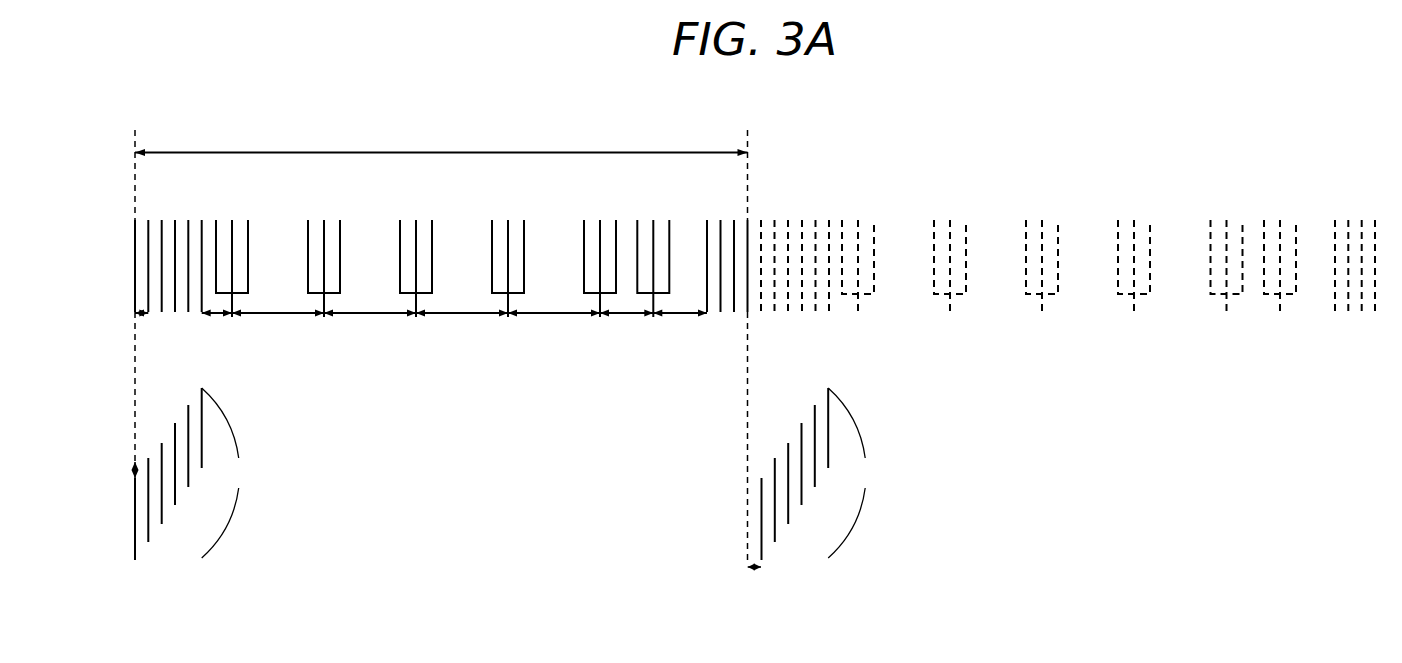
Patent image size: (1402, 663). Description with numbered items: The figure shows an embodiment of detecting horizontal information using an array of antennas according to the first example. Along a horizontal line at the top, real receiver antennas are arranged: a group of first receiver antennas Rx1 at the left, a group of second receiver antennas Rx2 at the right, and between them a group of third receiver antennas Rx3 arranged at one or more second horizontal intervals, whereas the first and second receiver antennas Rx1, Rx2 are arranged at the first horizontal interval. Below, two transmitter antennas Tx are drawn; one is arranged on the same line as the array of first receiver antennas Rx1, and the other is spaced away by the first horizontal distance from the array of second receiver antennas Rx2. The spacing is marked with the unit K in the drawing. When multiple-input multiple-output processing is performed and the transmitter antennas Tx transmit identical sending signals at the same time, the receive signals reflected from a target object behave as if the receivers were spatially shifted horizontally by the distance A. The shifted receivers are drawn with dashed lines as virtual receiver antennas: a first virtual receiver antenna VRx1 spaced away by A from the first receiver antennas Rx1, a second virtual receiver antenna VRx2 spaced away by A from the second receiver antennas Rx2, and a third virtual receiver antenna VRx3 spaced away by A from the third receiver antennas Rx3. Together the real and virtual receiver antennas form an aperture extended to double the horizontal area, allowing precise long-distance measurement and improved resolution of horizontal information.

The horizontal shift distance A is at (441, 143).
The first receiver antennas Rx1 is at (202, 218).
The second receiver antennas Rx2 is at (748, 218).
The third receiver antennas Rx3 is at (670, 218).
The first virtual receiver antenna VRx1 is at (829, 218).
The second virtual receiver antenna VRx2 is at (1335, 218).
The third virtual receiver antenna VRx3 is at (842, 218).
The transmitter antenna Tx is at (506, 474).
The unit pitch K is at (435, 453).